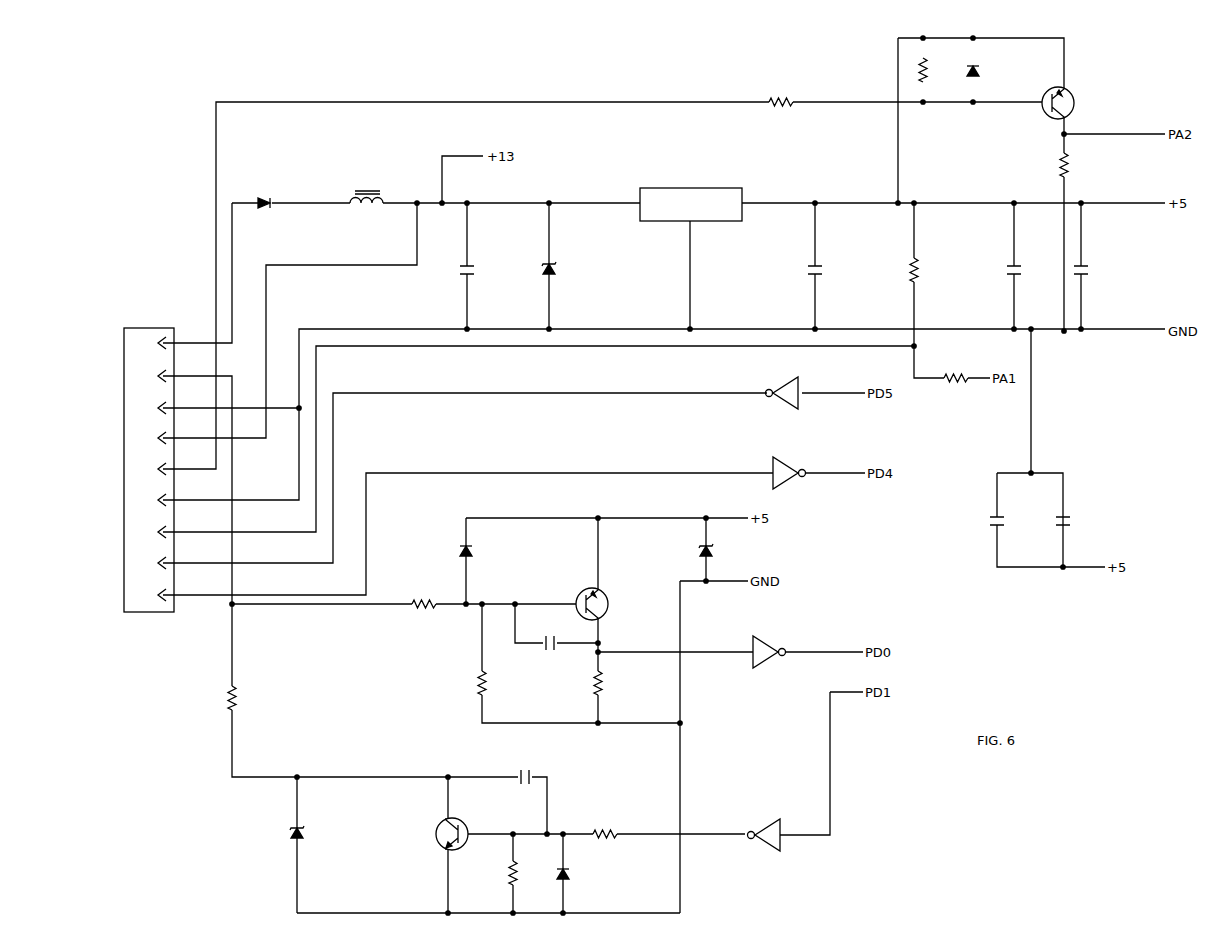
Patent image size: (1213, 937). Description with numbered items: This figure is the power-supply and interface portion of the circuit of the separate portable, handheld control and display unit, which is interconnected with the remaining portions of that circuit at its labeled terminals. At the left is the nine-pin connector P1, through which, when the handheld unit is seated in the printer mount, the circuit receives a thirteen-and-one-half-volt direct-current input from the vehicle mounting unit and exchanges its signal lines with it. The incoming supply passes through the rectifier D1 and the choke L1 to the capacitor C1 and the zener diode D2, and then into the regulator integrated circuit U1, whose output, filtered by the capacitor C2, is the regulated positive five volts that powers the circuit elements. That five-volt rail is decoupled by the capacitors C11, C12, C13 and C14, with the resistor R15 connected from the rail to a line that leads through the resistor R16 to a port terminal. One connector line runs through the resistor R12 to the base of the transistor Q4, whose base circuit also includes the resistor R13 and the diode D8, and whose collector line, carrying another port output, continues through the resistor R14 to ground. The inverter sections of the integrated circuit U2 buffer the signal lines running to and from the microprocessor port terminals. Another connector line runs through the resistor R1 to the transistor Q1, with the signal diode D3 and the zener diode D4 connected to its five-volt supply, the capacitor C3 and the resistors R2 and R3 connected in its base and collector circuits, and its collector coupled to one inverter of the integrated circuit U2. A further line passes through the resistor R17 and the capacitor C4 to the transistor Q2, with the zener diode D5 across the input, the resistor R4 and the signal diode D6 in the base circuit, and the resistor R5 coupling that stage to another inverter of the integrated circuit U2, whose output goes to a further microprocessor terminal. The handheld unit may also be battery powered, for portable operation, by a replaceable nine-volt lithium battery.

The connector P1 is at (108, 471).
The rectifier D1 is at (272, 204).
The choke L1 is at (366, 184).
The capacitor C1 is at (477, 266).
The zener diode D2 is at (583, 263).
The integrated circuit U1 is at (691, 199).
The capacitor C2 is at (826, 267).
The resistor R12 is at (776, 89).
The resistor R13 is at (939, 72).
The diode D8 is at (1004, 68).
The transistor Q4 is at (1087, 102).
The resistor R14 is at (1080, 167).
The resistor R15 is at (930, 270).
The capacitor C13 is at (1030, 270).
The capacitor C14 is at (1097, 270).
The resistor R16 is at (951, 365).
The capacitor C11 is at (1013, 520).
The capacitor C12 is at (1079, 520).
The integrated circuit U2 is at (781, 600).
The signal diode D3 is at (496, 546).
The zener diode D4 is at (744, 548).
The resistor R1 is at (419, 591).
The transistor Q1 is at (619, 602).
The capacitor C3 is at (541, 645).
The resistor R2 is at (496, 685).
The resistor R3 is at (613, 685).
The resistor R17 is at (247, 699).
The capacitor C4 is at (515, 777).
The zener diode D5 is at (336, 829).
The transistor Q2 is at (486, 824).
The resistor R4 is at (528, 875).
The signal diode D6 is at (594, 870).
The resistor R5 is at (600, 821).